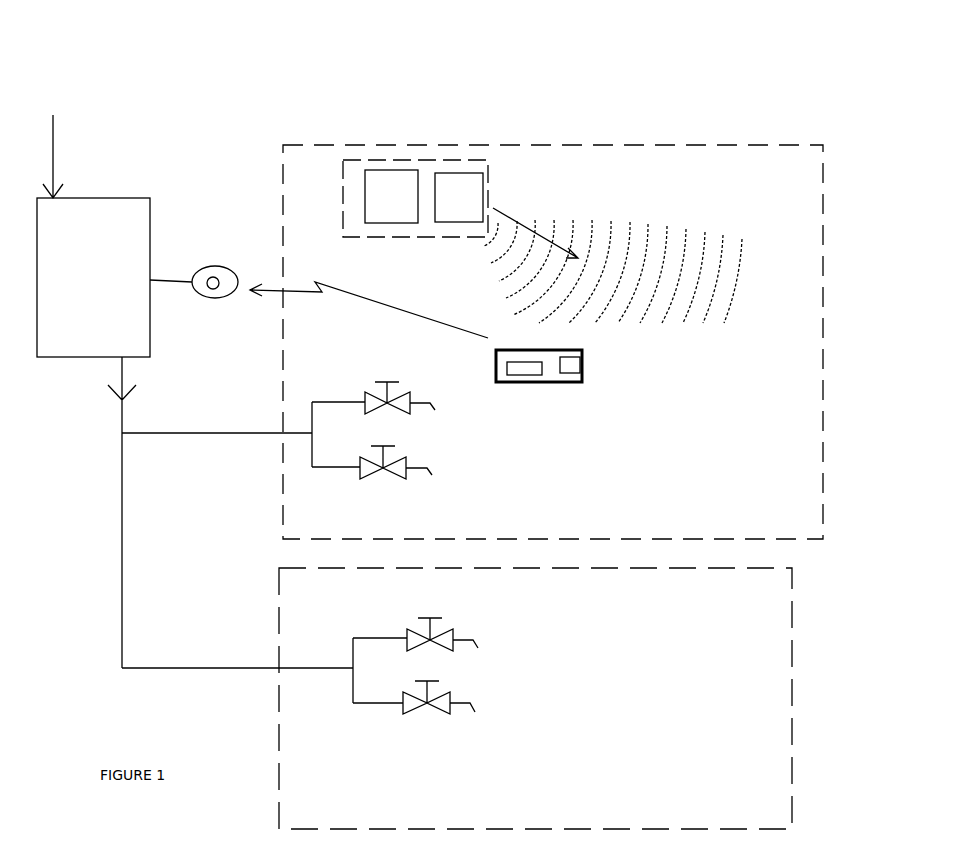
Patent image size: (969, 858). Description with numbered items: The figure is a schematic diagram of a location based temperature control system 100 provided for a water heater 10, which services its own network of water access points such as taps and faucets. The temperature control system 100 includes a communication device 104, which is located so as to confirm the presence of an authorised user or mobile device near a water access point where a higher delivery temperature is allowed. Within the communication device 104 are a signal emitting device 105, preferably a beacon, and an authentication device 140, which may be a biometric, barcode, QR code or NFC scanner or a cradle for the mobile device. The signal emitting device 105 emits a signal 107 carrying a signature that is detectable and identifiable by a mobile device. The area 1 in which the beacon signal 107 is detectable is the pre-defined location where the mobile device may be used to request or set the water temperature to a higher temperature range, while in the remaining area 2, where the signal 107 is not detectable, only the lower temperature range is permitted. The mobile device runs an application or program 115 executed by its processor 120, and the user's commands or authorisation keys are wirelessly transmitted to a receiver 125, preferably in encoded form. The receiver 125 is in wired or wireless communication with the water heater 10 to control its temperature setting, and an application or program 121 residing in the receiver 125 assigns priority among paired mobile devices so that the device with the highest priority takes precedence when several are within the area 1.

The area 1 is at (825, 147).
The remaining area 2 is at (795, 613).
The water heater 10 is at (90, 205).
The temperature control system 100 is at (585, 363).
The communication device 104 is at (345, 150).
The signal emitting device 105 is at (460, 173).
The signal 107 is at (607, 228).
The application or program 115 is at (530, 375).
The processor 120 is at (583, 372).
The application or program 121 is at (207, 298).
The receiver 125 is at (205, 265).
The authentication device 140 is at (405, 170).